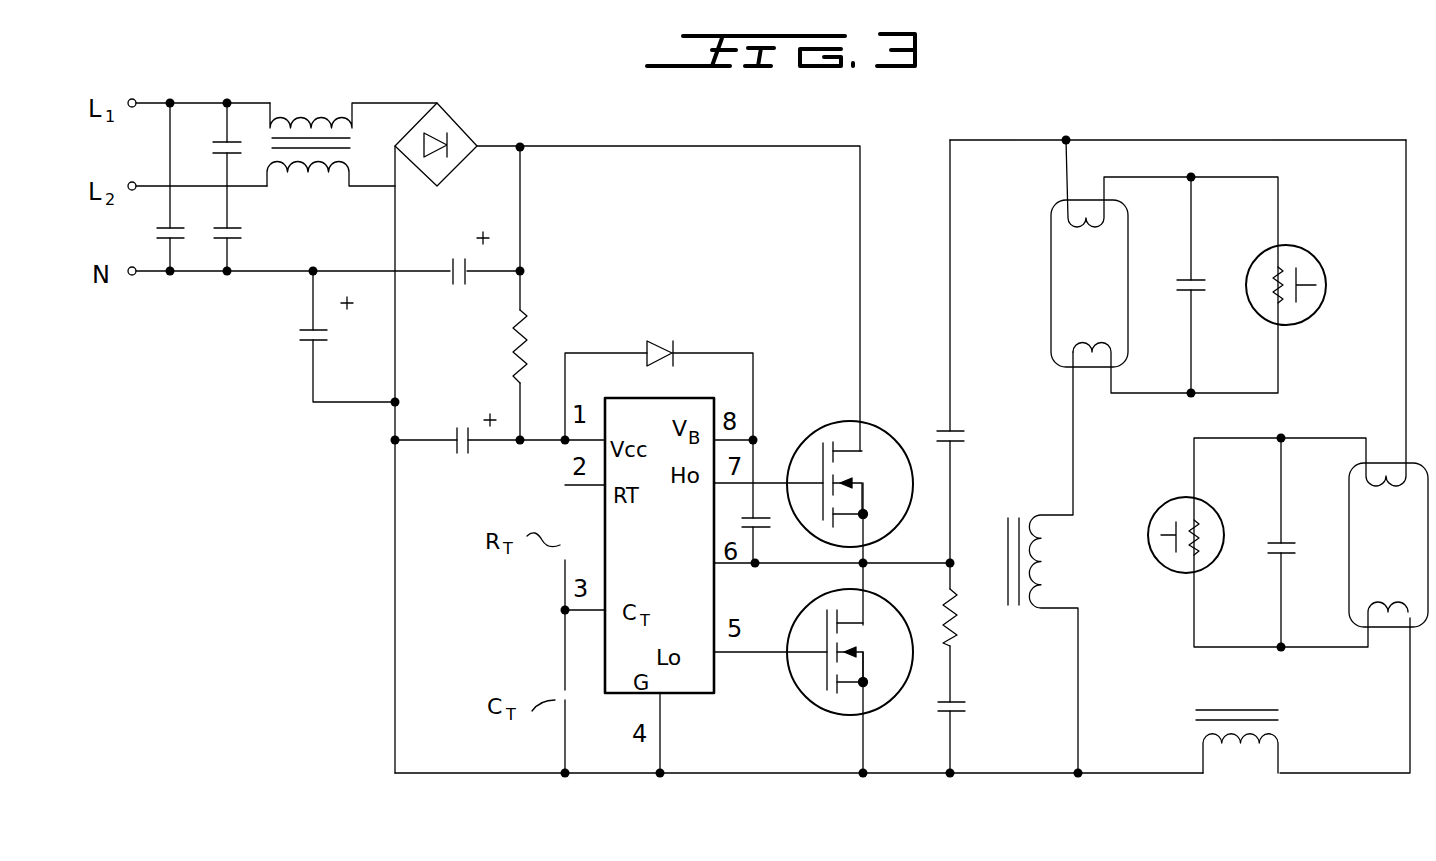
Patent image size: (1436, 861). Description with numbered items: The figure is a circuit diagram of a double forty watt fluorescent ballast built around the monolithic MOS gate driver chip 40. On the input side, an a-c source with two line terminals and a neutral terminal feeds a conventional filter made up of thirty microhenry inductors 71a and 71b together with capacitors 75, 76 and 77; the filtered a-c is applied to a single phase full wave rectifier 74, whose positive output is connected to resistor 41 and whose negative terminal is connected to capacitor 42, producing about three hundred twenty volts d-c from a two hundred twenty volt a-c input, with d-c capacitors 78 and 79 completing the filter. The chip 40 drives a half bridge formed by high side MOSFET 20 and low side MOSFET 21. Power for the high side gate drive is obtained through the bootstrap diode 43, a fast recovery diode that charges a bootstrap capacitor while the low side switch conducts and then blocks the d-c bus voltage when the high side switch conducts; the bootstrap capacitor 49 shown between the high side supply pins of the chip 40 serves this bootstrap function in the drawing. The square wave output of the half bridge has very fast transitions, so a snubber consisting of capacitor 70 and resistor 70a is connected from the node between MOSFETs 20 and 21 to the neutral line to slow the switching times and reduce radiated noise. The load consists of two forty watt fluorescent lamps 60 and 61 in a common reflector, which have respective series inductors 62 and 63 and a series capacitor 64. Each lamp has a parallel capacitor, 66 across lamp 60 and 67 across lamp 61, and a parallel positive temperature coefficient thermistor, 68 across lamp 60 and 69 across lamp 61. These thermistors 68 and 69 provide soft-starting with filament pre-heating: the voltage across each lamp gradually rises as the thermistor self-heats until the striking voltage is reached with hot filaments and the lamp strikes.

The MOSFET 20 is at (843, 420).
The MOSFET 21 is at (838, 712).
The chip 40 is at (685, 695).
The resistor 41 is at (515, 368).
The capacitor 42 is at (468, 458).
The bootstrap diode 43 is at (663, 338).
The bootstrap capacitor 49 is at (768, 524).
The fluorescent lamp 60 is at (1051, 288).
The fluorescent lamp 61 is at (1349, 547).
The series inductor 62 is at (1045, 580).
The series inductor 63 is at (1230, 748).
The series capacitor 64 is at (982, 430).
The parallel capacitor 66 is at (1212, 283).
The parallel capacitor 67 is at (1262, 550).
The positive temperature coefficient thermistor 68 is at (1320, 278).
The positive temperature coefficient thermistor 69 is at (1160, 565).
The capacitor 70 is at (976, 712).
The resistor 70a is at (956, 618).
The inductor 71a is at (307, 113).
The inductor 71b is at (297, 172).
The single phase full wave rectifier 74 is at (460, 127).
The capacitor 75 is at (155, 232).
The capacitor 76 is at (204, 135).
The capacitor 77 is at (243, 232).
The d-c capacitor 78 is at (300, 338).
The d-c capacitor 79 is at (474, 295).